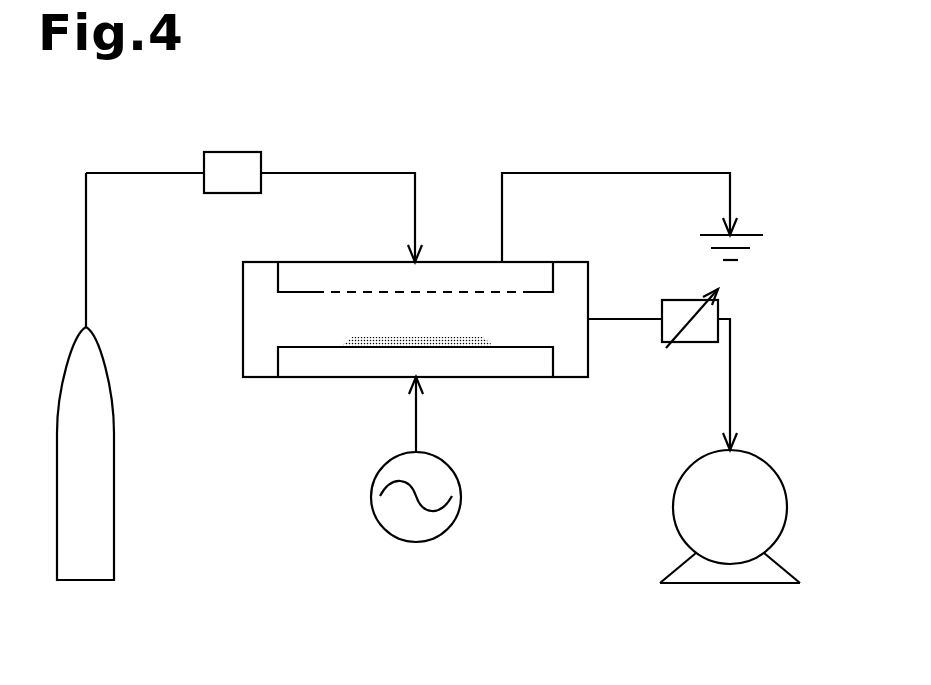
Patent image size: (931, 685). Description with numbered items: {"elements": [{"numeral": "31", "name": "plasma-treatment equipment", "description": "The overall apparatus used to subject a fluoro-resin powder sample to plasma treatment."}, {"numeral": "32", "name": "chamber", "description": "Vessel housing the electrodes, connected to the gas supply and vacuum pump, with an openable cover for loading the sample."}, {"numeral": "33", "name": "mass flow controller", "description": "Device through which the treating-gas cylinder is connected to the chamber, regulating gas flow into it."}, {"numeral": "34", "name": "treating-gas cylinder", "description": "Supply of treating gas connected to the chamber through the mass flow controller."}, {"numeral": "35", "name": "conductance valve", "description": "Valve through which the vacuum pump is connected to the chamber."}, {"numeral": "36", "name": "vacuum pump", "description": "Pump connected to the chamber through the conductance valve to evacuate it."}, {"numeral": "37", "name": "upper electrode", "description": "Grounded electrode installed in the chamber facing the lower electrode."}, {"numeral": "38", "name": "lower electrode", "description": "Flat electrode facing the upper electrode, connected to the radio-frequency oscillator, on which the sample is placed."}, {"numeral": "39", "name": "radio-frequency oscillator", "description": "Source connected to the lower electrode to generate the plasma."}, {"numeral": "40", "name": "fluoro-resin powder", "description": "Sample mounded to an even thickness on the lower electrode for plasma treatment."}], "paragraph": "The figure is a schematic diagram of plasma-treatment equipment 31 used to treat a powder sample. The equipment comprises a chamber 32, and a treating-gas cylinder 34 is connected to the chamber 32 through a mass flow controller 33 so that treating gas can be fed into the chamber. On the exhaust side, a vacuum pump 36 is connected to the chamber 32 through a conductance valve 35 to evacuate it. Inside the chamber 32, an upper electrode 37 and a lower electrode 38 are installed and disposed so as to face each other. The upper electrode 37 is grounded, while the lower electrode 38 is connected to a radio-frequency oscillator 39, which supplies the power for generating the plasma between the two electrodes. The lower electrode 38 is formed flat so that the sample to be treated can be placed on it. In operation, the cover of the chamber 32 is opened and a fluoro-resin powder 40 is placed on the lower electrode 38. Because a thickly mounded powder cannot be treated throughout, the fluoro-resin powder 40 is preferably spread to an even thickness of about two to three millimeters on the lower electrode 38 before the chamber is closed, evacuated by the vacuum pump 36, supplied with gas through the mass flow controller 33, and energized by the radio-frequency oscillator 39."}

The plasma processing apparatus 31 is at (760, 148).
The processing chamber 32 is at (243, 318).
The flow control valve 33 is at (228, 152).
The gas cylinder 34 is at (114, 490).
The variable conductance valve 35 is at (664, 300).
The vacuum pump 36 is at (780, 458).
The upper electrode 37 is at (278, 275).
The lower electrode 38 is at (278, 363).
The high frequency power source 39 is at (456, 464).
The sample 40 is at (463, 336).